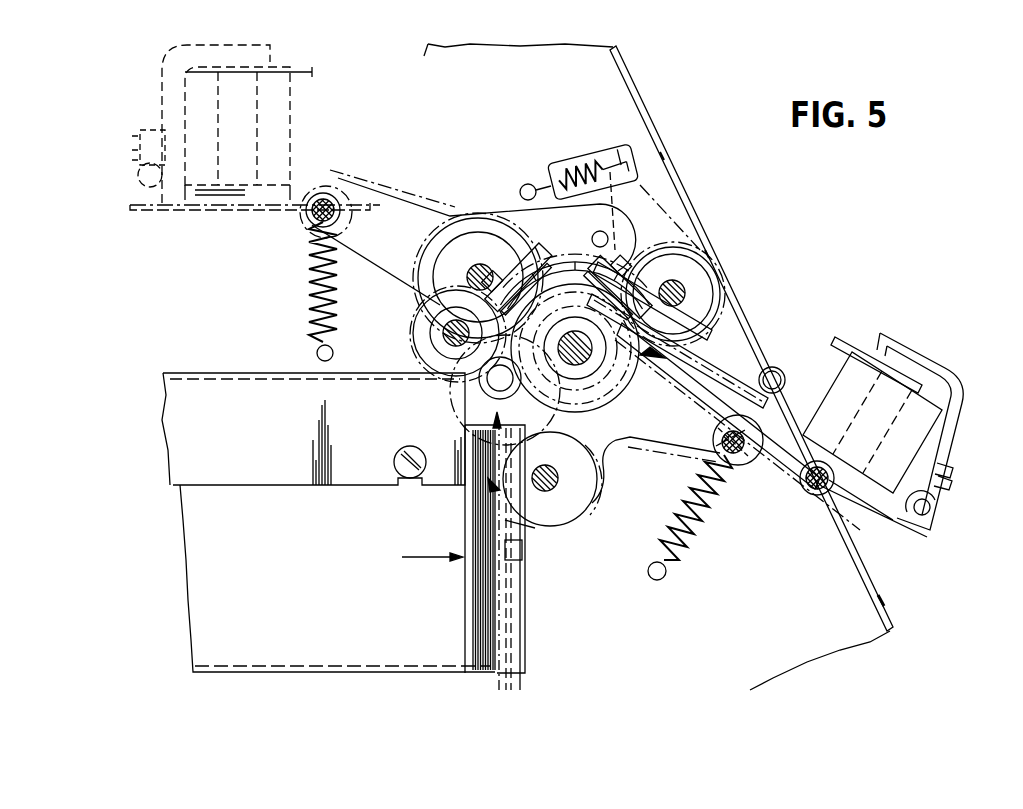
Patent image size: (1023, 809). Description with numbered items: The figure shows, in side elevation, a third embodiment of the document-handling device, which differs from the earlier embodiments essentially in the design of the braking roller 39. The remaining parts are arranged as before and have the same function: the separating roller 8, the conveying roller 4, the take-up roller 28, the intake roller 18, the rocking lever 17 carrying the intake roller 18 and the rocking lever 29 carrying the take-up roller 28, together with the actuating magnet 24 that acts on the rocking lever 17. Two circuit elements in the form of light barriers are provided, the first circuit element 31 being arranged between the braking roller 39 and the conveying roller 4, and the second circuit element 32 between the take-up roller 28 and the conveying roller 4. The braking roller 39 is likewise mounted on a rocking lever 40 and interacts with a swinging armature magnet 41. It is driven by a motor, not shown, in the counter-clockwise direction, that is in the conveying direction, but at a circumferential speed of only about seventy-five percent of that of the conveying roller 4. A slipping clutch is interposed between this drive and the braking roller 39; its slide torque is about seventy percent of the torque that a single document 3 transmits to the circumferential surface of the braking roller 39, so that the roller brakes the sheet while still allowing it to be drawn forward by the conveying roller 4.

The document 3 is at (513, 551).
The conveying roller 4 is at (592, 348).
The separating roller 8 is at (438, 334).
The rocking lever 17 is at (677, 497).
The intake roller 18 is at (552, 508).
The actuating magnet 24 is at (881, 413).
The take-up roller 28 is at (695, 285).
The rocking lever 29 is at (613, 170).
The first circuit element 31 is at (510, 236).
The second circuit element 32 is at (689, 334).
The braking roller 39 is at (478, 249).
The rocking lever 40 is at (468, 220).
The swinging armature magnet 41 is at (255, 127).